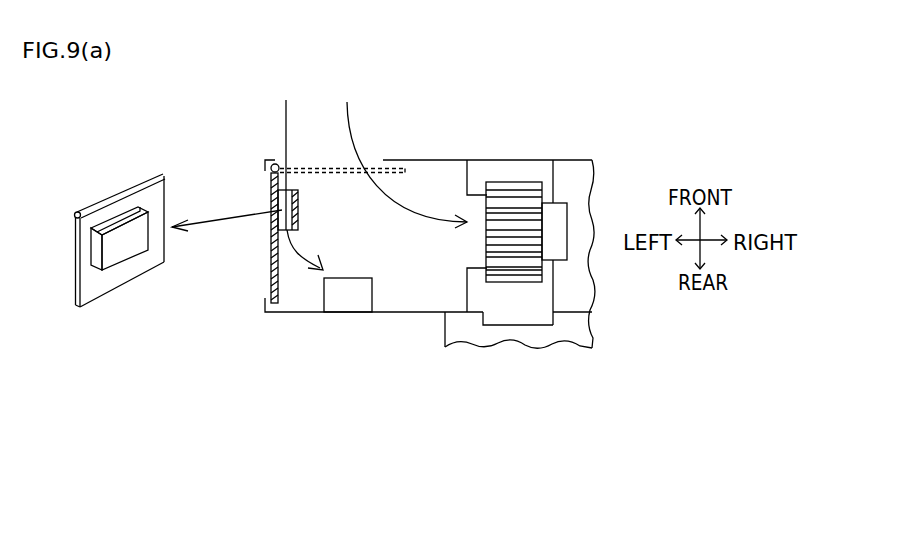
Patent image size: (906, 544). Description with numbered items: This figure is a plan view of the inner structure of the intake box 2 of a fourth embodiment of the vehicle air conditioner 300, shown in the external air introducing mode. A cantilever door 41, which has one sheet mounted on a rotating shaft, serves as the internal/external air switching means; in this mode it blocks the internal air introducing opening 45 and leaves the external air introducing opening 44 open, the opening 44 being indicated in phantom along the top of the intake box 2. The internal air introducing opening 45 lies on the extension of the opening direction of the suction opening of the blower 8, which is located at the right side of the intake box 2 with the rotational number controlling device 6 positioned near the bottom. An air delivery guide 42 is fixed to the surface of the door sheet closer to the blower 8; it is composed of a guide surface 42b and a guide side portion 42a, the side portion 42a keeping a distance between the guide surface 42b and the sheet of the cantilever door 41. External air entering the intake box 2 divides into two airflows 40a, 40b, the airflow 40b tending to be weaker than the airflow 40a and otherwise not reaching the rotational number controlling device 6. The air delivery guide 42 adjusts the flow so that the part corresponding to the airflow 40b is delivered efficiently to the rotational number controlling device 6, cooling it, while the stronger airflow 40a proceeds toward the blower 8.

The image forming apparatus 300 is at (620, 118).
The intake box 2 is at (450, 159).
The blower 8 is at (515, 182).
The rotational number controlling device 6 is at (322, 293).
The cantilever door 41 is at (165, 206).
The air delivery guide 42 is at (95, 302).
The guide side portion 42a is at (93, 247).
The guide surface 42b is at (120, 247).
The internal air introducing opening 45 is at (273, 293).
The airflow 40a is at (348, 119).
The airflow 40b is at (285, 122).
The external air introducing opening 44 is at (383, 160).